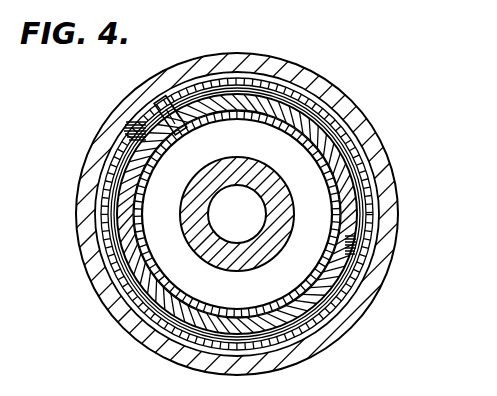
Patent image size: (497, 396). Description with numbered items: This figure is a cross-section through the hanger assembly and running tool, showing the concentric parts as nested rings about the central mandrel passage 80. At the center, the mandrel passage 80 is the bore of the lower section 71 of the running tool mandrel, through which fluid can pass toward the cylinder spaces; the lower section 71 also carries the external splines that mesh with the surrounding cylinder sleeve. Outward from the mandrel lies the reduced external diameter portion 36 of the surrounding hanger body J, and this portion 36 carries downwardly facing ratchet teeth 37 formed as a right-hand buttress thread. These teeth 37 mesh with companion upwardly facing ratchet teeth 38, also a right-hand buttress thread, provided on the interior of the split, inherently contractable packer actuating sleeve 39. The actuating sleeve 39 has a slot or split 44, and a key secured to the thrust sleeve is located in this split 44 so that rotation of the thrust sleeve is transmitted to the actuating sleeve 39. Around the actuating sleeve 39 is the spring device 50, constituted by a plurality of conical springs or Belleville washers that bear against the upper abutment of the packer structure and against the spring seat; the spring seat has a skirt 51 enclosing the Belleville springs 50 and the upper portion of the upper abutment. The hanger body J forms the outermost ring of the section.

The hanger body J is at (388, 147).
The skirt 51 is at (317, 100).
The ratchet teeth 37 is at (172, 117).
The packer actuating sleeve 39 is at (307, 306).
The reduced external diameter portion 36 is at (137, 221).
The ratchet teeth 38 is at (352, 229).
The spring device 50 is at (167, 330).
The slot or split 44 is at (177, 111).
The lower section of the running tool mandrel 71 is at (222, 258).
The mandrel passage 80 is at (250, 224).